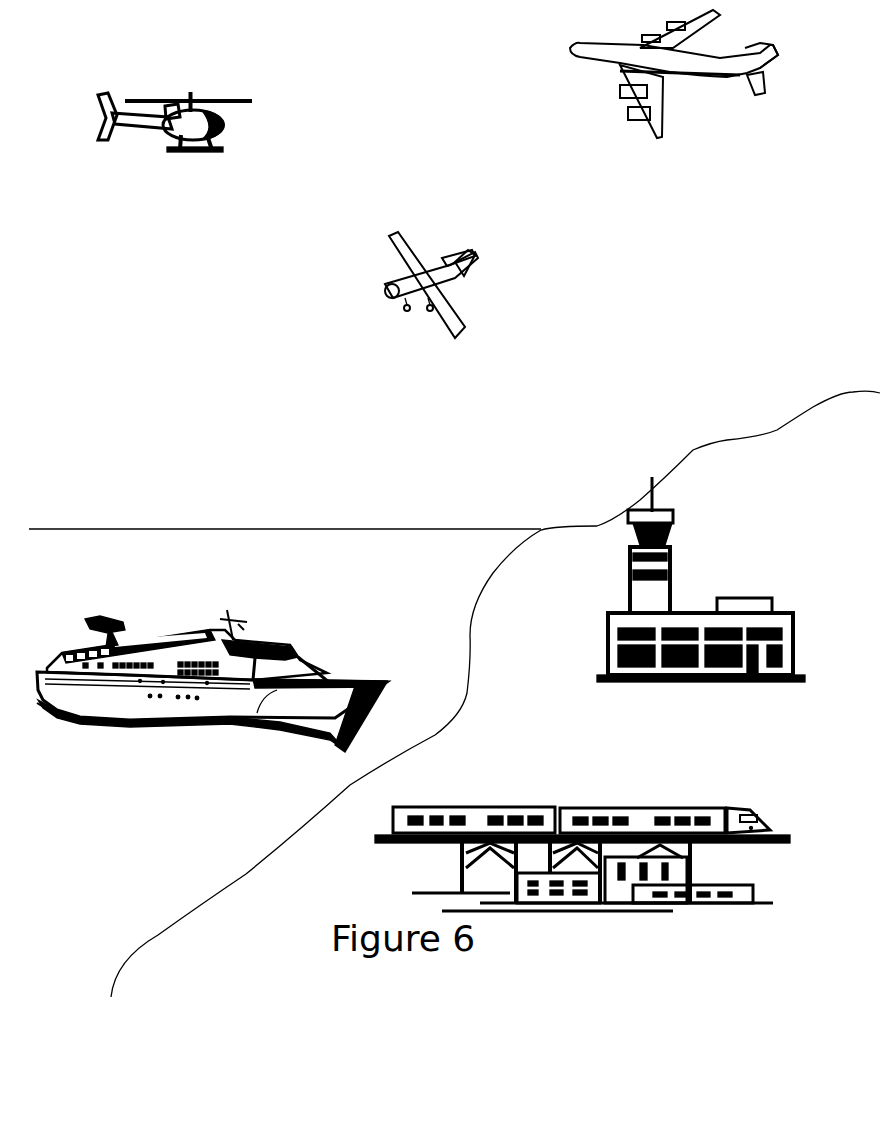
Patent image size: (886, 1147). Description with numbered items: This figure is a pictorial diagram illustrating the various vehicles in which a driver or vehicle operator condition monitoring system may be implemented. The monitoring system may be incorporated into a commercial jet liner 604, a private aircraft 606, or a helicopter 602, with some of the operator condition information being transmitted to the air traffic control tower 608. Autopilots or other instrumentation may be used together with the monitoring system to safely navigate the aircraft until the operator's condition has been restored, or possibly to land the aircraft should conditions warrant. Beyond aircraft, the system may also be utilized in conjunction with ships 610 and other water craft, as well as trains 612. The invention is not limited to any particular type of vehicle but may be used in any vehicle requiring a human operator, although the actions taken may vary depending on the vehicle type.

The helicopter 602 is at (217, 140).
The commercial jet liner 604 is at (677, 65).
The private aircraft 606 is at (443, 310).
The air traffic control tower 608 is at (652, 598).
The ships 610 is at (293, 647).
The trains 612 is at (647, 817).